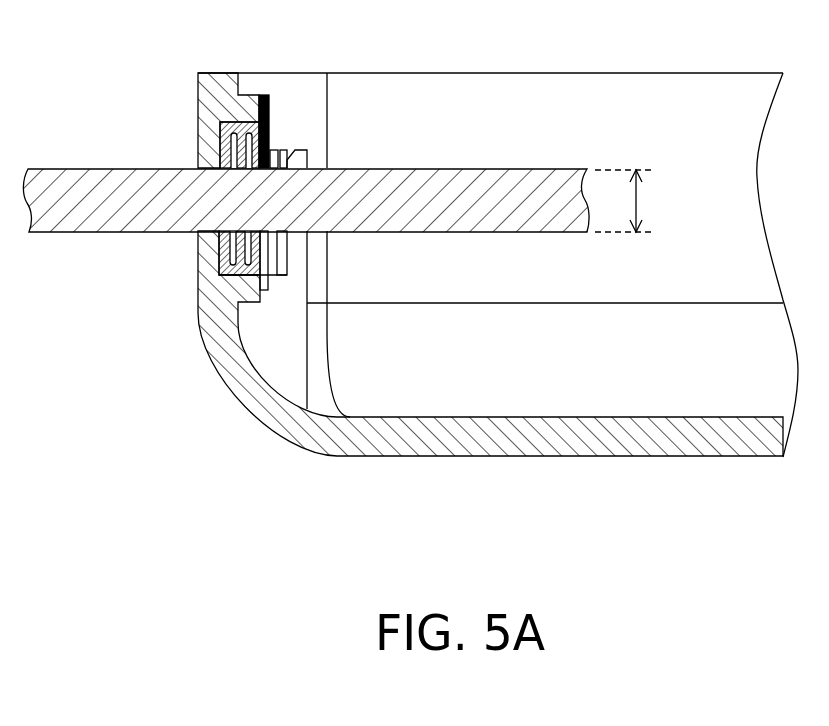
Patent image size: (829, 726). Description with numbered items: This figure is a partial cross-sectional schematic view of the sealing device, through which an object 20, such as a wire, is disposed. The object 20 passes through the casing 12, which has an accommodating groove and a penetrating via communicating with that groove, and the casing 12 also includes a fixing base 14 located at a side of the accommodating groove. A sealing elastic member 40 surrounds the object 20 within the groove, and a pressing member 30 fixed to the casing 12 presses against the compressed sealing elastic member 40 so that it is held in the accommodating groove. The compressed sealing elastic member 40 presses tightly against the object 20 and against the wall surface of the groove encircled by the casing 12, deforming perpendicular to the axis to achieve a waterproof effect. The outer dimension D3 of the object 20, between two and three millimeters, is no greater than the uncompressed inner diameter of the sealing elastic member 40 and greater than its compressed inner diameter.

The casing 12 is at (520, 438).
The fixing base 14 is at (277, 354).
The object 20 is at (130, 178).
The pressing member 30 is at (268, 122).
The sealing elastic member 40 is at (213, 100).
The outer dimension D3 is at (637, 201).